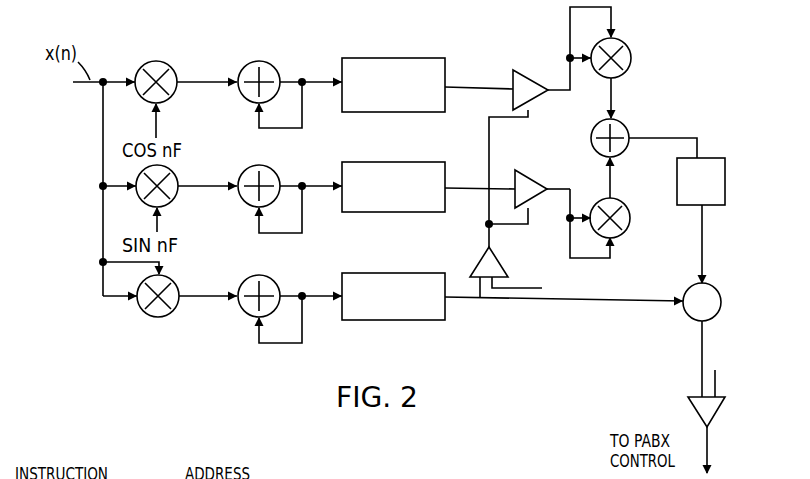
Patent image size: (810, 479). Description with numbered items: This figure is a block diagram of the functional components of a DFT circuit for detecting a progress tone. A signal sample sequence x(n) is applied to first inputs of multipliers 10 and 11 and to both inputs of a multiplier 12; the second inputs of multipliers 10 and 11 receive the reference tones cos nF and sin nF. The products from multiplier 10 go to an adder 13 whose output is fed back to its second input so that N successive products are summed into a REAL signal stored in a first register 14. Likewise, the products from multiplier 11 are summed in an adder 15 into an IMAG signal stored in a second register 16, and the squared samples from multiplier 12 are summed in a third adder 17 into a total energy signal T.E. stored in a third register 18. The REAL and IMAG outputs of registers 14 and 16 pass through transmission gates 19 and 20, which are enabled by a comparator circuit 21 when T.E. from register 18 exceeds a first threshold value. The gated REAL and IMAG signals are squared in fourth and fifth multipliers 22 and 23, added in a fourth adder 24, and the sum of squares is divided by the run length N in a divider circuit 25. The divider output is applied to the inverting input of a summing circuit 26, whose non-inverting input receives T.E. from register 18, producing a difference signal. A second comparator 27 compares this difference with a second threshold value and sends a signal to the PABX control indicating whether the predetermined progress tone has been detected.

The multiplier 10 is at (172, 66).
The multiplier 11 is at (178, 176).
The multiplier 12 is at (171, 313).
The adder 13 is at (263, 63).
The first register 14 is at (432, 58).
The adder 15 is at (272, 169).
The second register 16 is at (425, 162).
The third adder 17 is at (270, 278).
The third register 18 is at (404, 273).
The transmission gate 19 is at (531, 72).
The transmission gate 20 is at (524, 172).
The comparator circuit 21 is at (506, 262).
The fourth multiplier 22 is at (626, 46).
The fifth multiplier 23 is at (630, 218).
The fourth adder 24 is at (627, 127).
The divider circuit 25 is at (725, 187).
The summing circuit 26 is at (720, 292).
The second comparator 27 is at (716, 411).